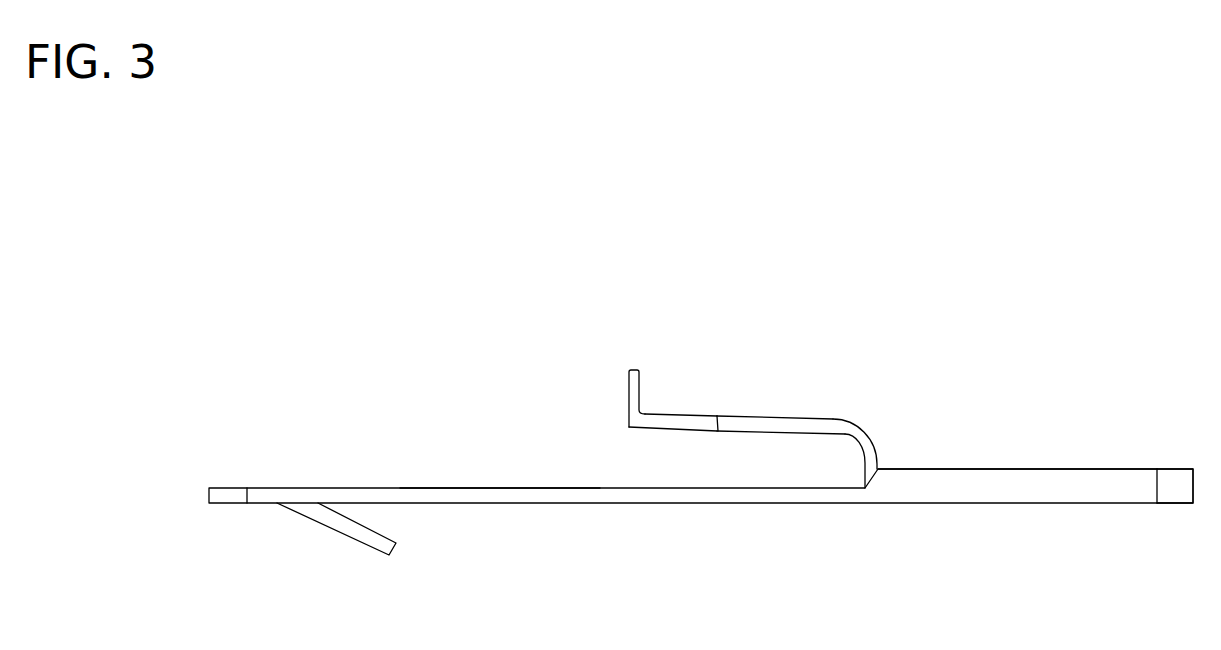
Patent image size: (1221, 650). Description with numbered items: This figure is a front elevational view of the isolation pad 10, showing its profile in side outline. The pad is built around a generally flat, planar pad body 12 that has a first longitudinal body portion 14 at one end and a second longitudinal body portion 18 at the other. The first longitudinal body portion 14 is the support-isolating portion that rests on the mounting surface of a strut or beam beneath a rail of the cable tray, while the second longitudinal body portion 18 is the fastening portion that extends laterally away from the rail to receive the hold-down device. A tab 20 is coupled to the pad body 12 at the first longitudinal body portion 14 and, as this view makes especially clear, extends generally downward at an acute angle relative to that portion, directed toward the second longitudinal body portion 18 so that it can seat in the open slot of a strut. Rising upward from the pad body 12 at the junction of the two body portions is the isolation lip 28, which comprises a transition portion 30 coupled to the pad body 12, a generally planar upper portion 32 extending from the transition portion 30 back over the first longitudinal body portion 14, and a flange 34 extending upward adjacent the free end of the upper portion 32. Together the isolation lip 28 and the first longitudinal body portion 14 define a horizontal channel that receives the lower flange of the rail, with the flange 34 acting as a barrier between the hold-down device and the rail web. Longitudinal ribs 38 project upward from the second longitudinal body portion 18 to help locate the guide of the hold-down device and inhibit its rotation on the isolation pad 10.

The isolation pad 10 is at (1013, 240).
The pad body 12 is at (733, 522).
The first longitudinal body portion 14 is at (470, 504).
The second longitudinal body portion 18 is at (1090, 504).
The tab 20 is at (348, 538).
The isolation lip 28 is at (812, 401).
The transition portion 30 is at (868, 436).
The upper portion 32 is at (727, 414).
The flange 34 is at (636, 382).
The longitudinal ribs 38 is at (1075, 469).